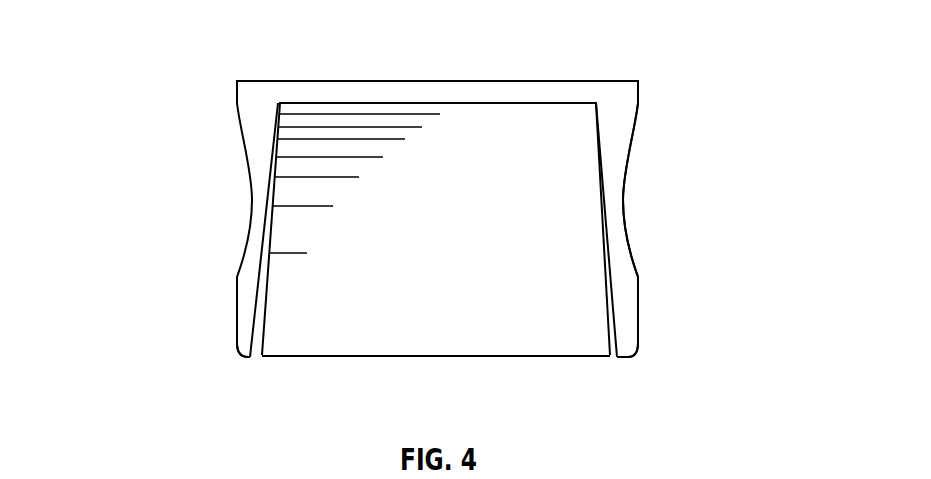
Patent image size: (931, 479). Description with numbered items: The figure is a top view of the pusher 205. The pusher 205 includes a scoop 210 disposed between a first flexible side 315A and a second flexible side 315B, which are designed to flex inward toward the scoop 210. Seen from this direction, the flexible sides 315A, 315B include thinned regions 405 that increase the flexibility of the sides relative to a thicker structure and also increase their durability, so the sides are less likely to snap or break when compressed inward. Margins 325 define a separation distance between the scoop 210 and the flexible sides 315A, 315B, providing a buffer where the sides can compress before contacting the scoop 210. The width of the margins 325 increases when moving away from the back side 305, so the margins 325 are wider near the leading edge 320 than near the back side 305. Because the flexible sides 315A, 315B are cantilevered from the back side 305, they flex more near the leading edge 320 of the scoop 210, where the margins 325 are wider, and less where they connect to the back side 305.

The pusher 205 is at (243, 55).
The back side 305 is at (535, 82).
The thinned regions 405 is at (634, 167).
The scoop 210 is at (566, 258).
The leading edge 320 is at (480, 357).
The first flexible side 315A is at (237, 288).
The second flexible side 315B is at (638, 307).
The margins 325 is at (256, 365).